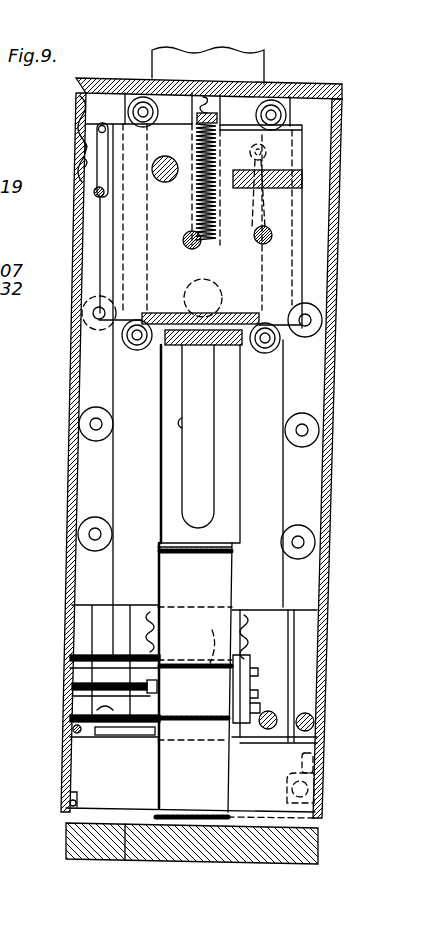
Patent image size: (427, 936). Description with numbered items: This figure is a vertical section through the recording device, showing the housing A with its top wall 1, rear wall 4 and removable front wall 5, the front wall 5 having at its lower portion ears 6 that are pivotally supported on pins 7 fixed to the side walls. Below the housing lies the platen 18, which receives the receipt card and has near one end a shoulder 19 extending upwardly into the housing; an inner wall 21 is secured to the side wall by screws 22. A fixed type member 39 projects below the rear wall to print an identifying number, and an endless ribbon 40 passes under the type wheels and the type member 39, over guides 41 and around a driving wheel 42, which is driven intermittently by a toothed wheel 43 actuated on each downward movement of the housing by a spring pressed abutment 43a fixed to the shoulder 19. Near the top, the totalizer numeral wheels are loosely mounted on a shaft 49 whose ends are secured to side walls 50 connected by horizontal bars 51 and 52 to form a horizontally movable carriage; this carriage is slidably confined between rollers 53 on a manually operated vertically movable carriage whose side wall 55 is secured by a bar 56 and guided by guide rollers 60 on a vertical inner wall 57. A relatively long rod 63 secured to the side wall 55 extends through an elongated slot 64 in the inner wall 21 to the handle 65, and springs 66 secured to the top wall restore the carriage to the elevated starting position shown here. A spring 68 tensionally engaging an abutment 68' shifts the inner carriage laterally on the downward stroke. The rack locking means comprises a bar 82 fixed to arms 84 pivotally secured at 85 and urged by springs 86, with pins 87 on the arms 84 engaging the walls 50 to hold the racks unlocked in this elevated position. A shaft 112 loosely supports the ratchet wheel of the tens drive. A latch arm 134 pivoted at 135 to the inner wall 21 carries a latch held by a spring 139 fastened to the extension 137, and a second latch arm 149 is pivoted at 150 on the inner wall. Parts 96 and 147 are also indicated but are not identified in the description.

The housing A is at (346, 81).
The top wall 1 is at (315, 83).
The rear wall 4 is at (77, 487).
The removable front wall 5 is at (327, 563).
The ears 6 is at (318, 800).
The pins 7 is at (316, 787).
The platen 18 is at (214, 862).
The shoulder 19 is at (86, 758).
The inner wall 21 is at (300, 650).
The screws 22 is at (72, 731).
The fixed type member 39 is at (127, 860).
The endless ribbon 40 is at (220, 573).
The guides 41 is at (178, 562).
The driving wheel 42 is at (195, 692).
The toothed wheel 43 is at (245, 682).
The spring pressed abutment 43a is at (258, 716).
The shaft 49 is at (163, 182).
The side walls 50 is at (276, 283).
The horizontal bar 51 is at (302, 182).
The horizontal bar 52 is at (228, 318).
The rollers 53 is at (140, 96).
The side wall 55 is at (272, 466).
The bar 56 is at (205, 348).
The vertical inner wall 57 is at (311, 402).
The guide rollers 60 is at (92, 328).
The long rod 63 is at (196, 292).
The elongated slot 64 is at (182, 425).
The manually operated handle 65 is at (258, 53).
The springs 66 is at (219, 97).
The spring 68 is at (319, 149).
The abutment 68' is at (323, 221).
The bar 82 is at (92, 158).
The arms 84 is at (98, 155).
The pivot 85 is at (96, 196).
The springs 86 is at (88, 124).
The pins 87 is at (100, 122).
The pin 96 is at (188, 247).
The shaft 112 is at (271, 238).
The arm 134 is at (296, 672).
The pivot 135 is at (268, 730).
The guide member 137 is at (246, 629).
The spring 139 is at (291, 626).
The plate 147 is at (115, 618).
The arm 149 is at (98, 630).
The pivot 150 is at (72, 703).